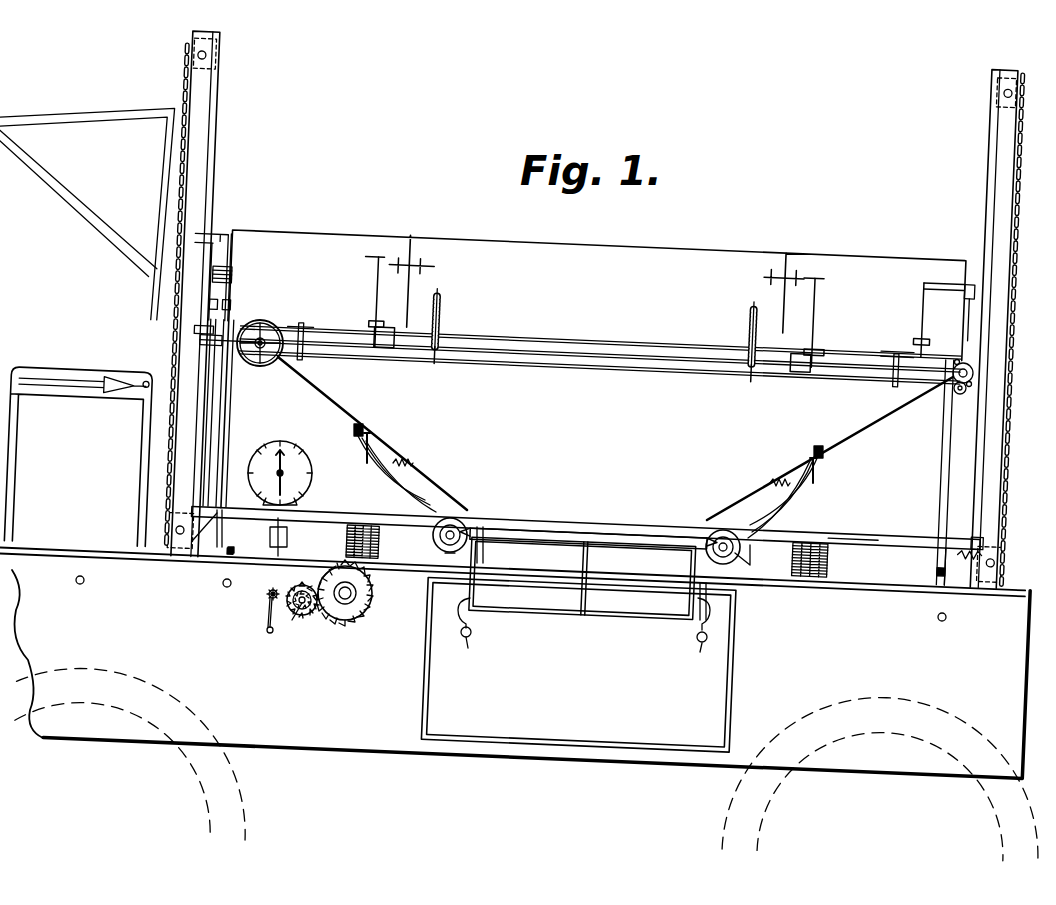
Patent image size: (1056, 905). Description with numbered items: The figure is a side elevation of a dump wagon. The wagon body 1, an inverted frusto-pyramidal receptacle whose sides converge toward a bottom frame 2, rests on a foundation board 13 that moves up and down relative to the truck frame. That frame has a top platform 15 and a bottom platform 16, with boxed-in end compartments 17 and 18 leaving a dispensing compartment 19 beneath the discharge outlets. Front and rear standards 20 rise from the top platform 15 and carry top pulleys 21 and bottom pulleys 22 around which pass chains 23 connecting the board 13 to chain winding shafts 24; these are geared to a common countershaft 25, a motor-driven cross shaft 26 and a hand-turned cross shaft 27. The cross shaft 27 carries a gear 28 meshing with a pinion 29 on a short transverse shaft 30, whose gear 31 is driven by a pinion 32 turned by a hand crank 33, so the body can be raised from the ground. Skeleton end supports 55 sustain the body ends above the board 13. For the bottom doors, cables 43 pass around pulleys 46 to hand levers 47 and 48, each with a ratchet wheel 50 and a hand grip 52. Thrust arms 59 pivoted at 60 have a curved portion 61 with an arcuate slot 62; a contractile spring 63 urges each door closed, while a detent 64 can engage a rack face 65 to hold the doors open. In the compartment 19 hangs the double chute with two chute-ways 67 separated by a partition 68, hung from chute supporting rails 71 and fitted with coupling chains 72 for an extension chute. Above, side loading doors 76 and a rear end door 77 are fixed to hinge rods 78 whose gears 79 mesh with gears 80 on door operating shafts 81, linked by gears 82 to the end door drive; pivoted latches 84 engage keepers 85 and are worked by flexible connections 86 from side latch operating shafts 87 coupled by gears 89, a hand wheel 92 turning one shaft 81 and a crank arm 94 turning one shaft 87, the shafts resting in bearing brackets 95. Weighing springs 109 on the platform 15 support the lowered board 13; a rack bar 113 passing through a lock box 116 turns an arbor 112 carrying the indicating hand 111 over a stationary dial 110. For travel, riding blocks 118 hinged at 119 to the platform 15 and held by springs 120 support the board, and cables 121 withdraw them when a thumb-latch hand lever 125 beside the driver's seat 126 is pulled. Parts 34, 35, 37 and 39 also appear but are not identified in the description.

The wagon body 1 is at (295, 291).
The bottom frame 2 is at (553, 515).
The foundation board 13 is at (867, 530).
The top platform 15 is at (855, 587).
The bottom platform 16 is at (568, 748).
The boxed-in compartment 17 is at (131, 753).
The boxed-in compartment 18 is at (883, 762).
The dispensing compartment 19 is at (578, 664).
The uprights or standards 20 is at (197, 193).
The top pulleys 21 is at (190, 52).
The bottom pulleys 22 is at (167, 530).
The flexible connections 23 is at (177, 310).
The chain winding shafts 24 is at (223, 587).
The countershaft 25 is at (720, 597).
The cross shaft 26 is at (82, 585).
The cross shaft 27 is at (353, 593).
The gear 28 is at (360, 620).
The pinion 29 is at (310, 607).
The short transverse shaft 30 is at (302, 603).
The gear 31 is at (292, 620).
The pinion 32 is at (273, 595).
The operating hand crank 33 is at (270, 608).
The rail end block 34 is at (973, 547).
The post channel 35 is at (213, 143).
The wheel bracket 37 is at (473, 547).
The roller wheel 39 is at (453, 520).
The cables 43 is at (213, 377).
The pulleys 46 is at (230, 307).
The hand lever 47 is at (213, 257).
The hand lever 48 is at (230, 250).
The ratchet wheel 50 is at (230, 287).
The hand grip 52 is at (207, 233).
The skeleton end supports 55 is at (230, 410).
The thrust arms 59 is at (407, 460).
The pivot 60 is at (358, 426).
The curved portion 61 is at (413, 487).
The arcuate slot 62 is at (417, 493).
The contractile spring 63 is at (400, 467).
The detent 64 is at (370, 440).
The rack face 65 is at (380, 443).
The chute-ways 67 is at (545, 607).
The partition 68 is at (587, 607).
The chute supporting rails 71 is at (610, 540).
The coupling chains 72 is at (700, 653).
The side loading doors 76 is at (635, 248).
The rear end loading door 77 is at (973, 280).
The hinge rods 78 is at (620, 337).
The gears 79 is at (440, 323).
The gears 80 is at (437, 347).
The door operating shafts 81 is at (663, 352).
The gears 82 is at (952, 362).
The pivoted latches 84 is at (427, 262).
The keepers 85 is at (423, 265).
The flexible connections 86 is at (377, 292).
The side latch operating shafts 87 is at (617, 365).
The gears 89 is at (957, 393).
The hand wheel 92 is at (283, 363).
The operating lever or crank arm 94 is at (217, 337).
The bearing brackets 95 is at (298, 327).
The weighing springs 109 is at (378, 538).
The stationary dial 110 is at (312, 460).
The indicating hand 111 is at (288, 452).
The rotatable arbor 112 is at (283, 473).
The rack bar 113 is at (300, 505).
The lock box 116 is at (290, 537).
The riding blocks 118 is at (217, 533).
The hinge 119 is at (230, 553).
The springs 120 is at (193, 540).
The flexible connections 121 is at (230, 547).
The hand lever 125 is at (72, 383).
The driver's seat 126 is at (62, 390).